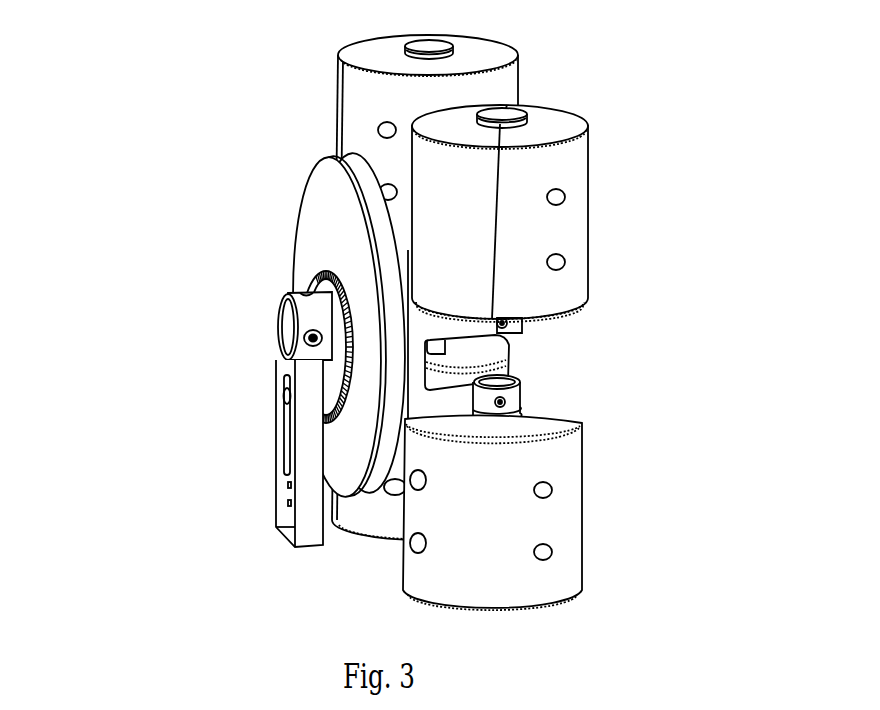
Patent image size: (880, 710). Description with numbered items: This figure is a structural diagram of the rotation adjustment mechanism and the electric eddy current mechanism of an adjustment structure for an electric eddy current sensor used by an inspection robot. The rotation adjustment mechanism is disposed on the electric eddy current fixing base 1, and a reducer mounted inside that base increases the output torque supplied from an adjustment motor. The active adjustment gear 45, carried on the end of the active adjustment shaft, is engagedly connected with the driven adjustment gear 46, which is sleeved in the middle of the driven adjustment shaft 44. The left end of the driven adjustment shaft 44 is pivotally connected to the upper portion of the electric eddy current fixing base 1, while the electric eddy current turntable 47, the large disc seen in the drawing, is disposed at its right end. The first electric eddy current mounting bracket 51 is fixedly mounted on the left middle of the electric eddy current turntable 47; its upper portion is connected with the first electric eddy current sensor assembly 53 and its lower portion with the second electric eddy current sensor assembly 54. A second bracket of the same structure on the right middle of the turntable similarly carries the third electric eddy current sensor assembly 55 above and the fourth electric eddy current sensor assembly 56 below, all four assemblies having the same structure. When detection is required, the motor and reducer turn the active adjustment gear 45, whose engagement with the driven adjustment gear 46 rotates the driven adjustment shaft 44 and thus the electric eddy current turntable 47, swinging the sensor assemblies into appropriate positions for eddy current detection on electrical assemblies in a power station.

The electric eddy current fixing base 1 is at (282, 474).
The driven adjustment shaft 44 is at (288, 320).
The active adjustment gear 45 is at (328, 399).
The driven adjustment gear 46 is at (332, 362).
The electric eddy current turntable 47 is at (330, 205).
The first electric eddy current mounting bracket 51 is at (475, 403).
The first electric eddy current sensor assembly 53 is at (565, 238).
The second electric eddy current sensor assembly 54 is at (561, 492).
The third electric eddy current sensor assembly 55 is at (348, 62).
The fourth electric eddy current sensor assembly 56 is at (507, 352).